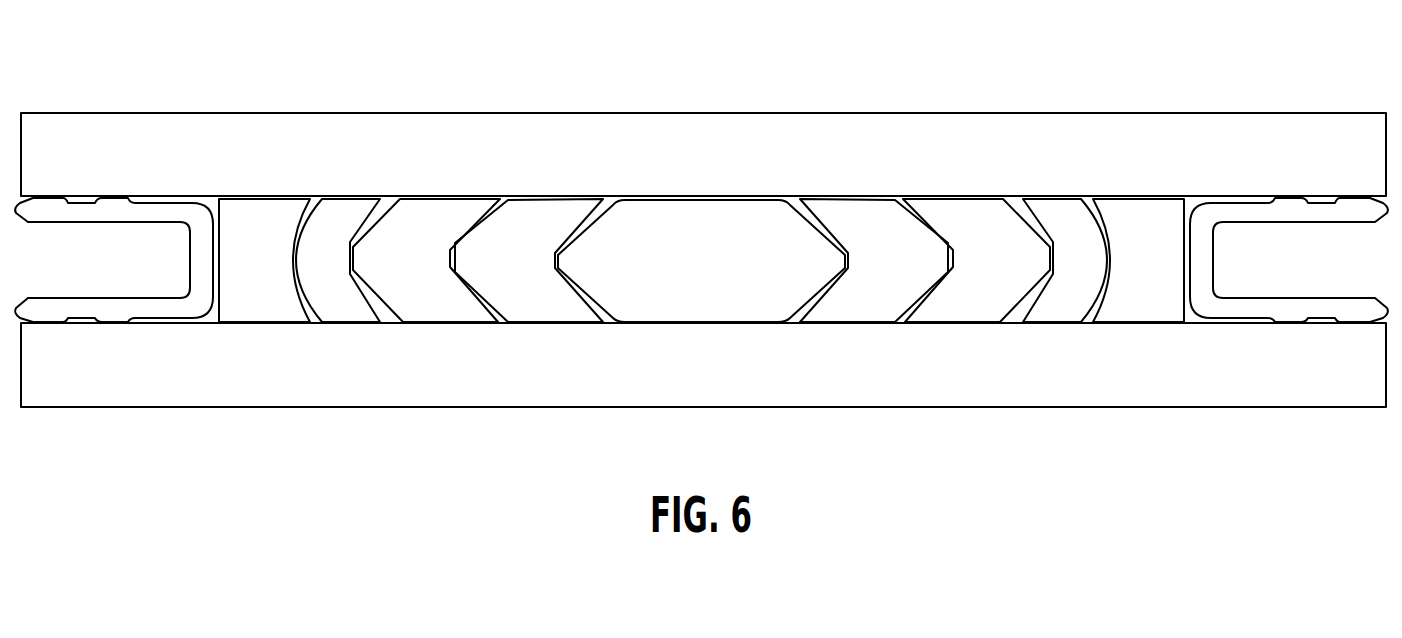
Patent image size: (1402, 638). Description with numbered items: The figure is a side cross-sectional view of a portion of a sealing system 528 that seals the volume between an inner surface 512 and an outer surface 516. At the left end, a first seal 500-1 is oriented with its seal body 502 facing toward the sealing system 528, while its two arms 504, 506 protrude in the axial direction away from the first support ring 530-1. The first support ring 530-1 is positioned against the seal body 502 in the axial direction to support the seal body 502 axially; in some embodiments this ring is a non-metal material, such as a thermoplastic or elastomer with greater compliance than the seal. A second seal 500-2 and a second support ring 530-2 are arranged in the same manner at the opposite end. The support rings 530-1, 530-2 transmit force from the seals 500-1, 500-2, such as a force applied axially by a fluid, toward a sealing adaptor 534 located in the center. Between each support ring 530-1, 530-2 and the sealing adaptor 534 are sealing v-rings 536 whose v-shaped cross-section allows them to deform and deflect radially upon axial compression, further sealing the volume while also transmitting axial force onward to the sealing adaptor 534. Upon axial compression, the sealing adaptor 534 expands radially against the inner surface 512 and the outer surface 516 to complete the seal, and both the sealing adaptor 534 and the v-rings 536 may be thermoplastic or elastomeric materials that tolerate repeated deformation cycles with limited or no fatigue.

The first seal 500-1 is at (114, 262).
The second seal 500-2 is at (1347, 213).
The seal body 502 is at (197, 258).
The arm 504 is at (146, 210).
The arm 506 is at (118, 313).
The inner surface 512 is at (717, 375).
The outer surface 516 is at (717, 165).
The sealing system 528 is at (707, 113).
The first support ring 530-1 is at (277, 272).
The second support ring 530-2 is at (1170, 272).
The sealing adaptor 534 is at (717, 274).
The sealing v-ring 536 is at (417, 272).